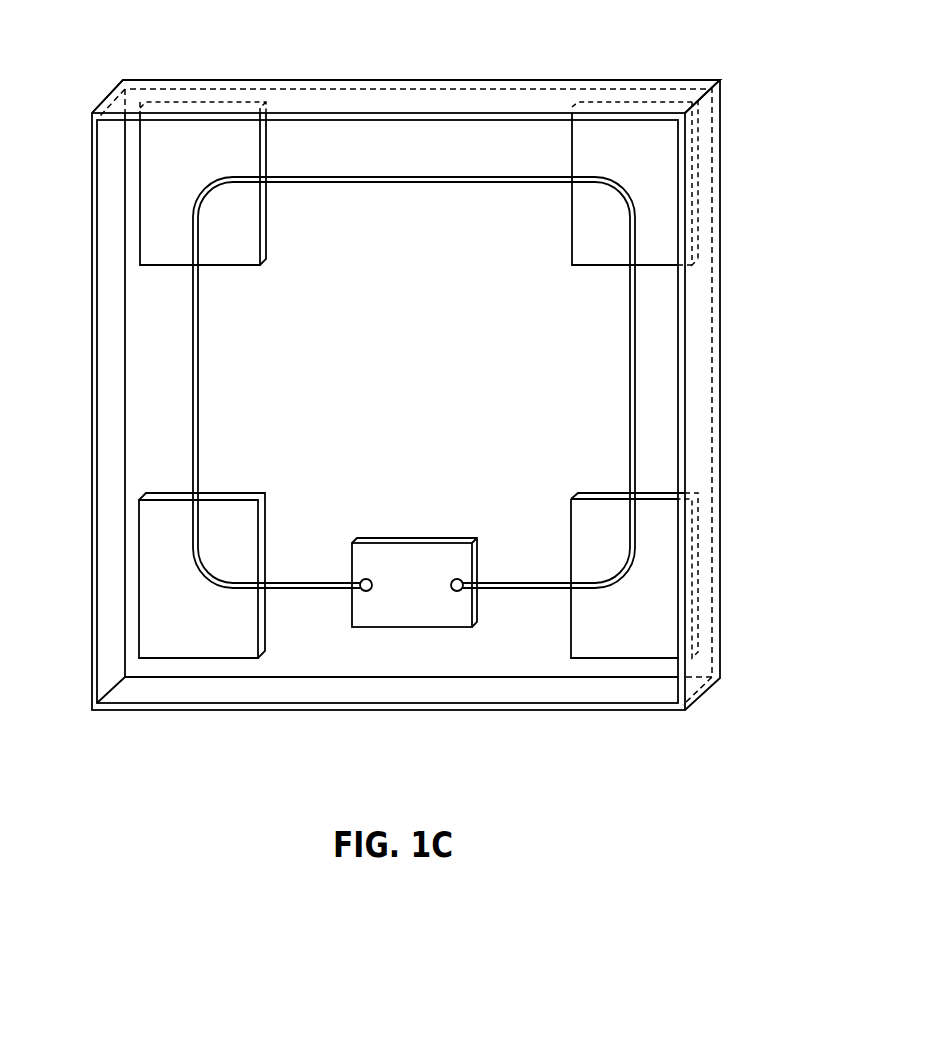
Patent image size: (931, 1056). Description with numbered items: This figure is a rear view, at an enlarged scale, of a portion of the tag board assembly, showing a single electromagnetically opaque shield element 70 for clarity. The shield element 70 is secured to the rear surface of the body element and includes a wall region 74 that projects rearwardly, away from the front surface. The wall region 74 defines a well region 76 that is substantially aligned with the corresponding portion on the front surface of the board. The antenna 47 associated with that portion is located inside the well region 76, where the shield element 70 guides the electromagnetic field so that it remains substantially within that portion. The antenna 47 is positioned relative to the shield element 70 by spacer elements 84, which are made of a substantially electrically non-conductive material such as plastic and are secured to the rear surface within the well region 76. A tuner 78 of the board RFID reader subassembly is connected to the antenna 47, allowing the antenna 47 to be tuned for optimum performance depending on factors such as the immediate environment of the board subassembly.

The shield element 70 is at (485, 73).
The wall region 74 is at (700, 322).
The well region 76 is at (653, 407).
The antenna 47 is at (197, 393).
The spacer element 84 is at (243, 523).
The tuner 78 is at (408, 552).